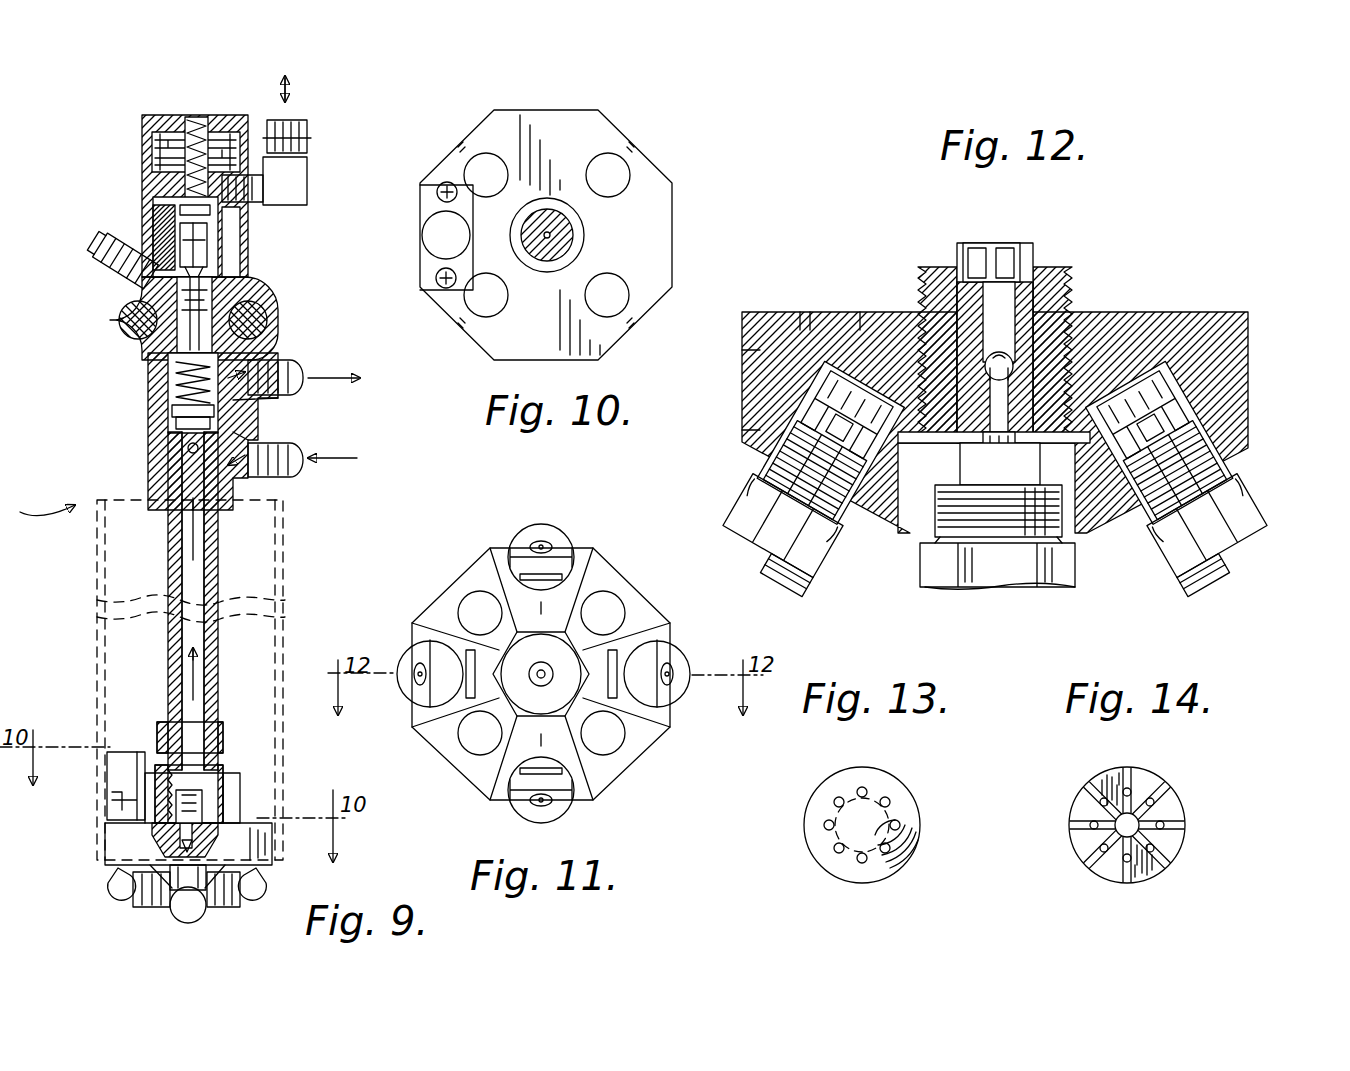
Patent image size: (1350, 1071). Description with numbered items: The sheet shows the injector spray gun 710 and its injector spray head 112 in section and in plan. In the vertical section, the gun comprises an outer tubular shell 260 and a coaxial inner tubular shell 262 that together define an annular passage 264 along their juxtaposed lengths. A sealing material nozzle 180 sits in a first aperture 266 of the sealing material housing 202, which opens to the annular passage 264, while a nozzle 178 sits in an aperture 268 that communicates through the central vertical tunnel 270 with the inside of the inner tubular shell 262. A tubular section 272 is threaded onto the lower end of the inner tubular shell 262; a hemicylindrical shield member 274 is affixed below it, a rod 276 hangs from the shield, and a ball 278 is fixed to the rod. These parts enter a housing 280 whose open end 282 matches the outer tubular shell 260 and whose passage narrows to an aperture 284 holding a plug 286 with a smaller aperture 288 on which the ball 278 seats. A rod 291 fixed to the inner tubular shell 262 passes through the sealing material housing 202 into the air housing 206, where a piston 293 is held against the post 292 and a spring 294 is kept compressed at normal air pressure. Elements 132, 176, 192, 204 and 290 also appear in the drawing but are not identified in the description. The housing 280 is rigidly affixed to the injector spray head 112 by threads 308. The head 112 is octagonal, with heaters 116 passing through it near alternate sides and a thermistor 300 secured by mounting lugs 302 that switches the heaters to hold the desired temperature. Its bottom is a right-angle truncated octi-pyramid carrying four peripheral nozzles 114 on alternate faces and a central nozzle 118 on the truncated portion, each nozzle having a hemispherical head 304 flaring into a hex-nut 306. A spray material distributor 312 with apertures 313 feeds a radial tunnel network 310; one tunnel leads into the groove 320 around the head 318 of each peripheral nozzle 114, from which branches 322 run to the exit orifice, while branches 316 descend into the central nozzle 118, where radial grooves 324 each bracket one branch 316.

In FIG. 9, the dispensing head assembly 710 is at (39, 497).
In FIG. 9, the injector spray head 112 is at (115, 843).
In FIG. 10, the injector spray head 112 is at (560, 111).
In FIG. 12, the injector spray head 112 is at (1210, 318).
In FIG. 9, the peripheral nozzles 114 is at (97, 620).
In FIG. 11, the peripheral nozzles 114 is at (545, 538).
In FIG. 12, the peripheral nozzles 114 is at (838, 545).
In FIG. 9, the heaters 116 is at (240, 795).
In FIG. 10, the heaters 116 is at (500, 162).
In FIG. 11, the heaters 116 is at (472, 602).
In FIG. 9, the central nozzle 118 is at (185, 926).
In FIG. 11, the central nozzle 118 is at (538, 638).
In FIG. 12, the central nozzle 118 is at (1066, 570).
In FIG. 9, the mounting bolt 132 is at (130, 320).
In FIG. 9, the air fitting 176 is at (292, 190).
In FIG. 9, the nozzle 178 is at (290, 378).
In FIG. 9, the sealing material nozzle 180 is at (303, 470).
In FIG. 9, the manifold block 192 is at (262, 293).
In FIG. 9, the sealing material housing 202 is at (160, 452).
In FIG. 9, the side fitting 204 is at (100, 243).
In FIG. 9, the air housing 206 is at (152, 150).
In FIG. 9, the outer tubular shell 260 is at (218, 543).
In FIG. 10, the outer tubular shell 260 is at (584, 250).
In FIG. 9, the inner tubular shell 262 is at (218, 568).
In FIG. 10, the inner tubular shell 262 is at (566, 232).
In FIG. 9, the annular passage 264 is at (218, 527).
In FIG. 9, the first aperture 266 is at (272, 428).
In FIG. 9, the aperture 268 is at (275, 410).
In FIG. 9, the central vertical tunnel 270 is at (172, 396).
In FIG. 9, the tubular section 272 is at (222, 770).
In FIG. 9, the hemicylindrical shield member 274 is at (178, 828).
In FIG. 12, the hemicylindrical shield member 274 is at (985, 243).
In FIG. 12, the rod 276 is at (1012, 300).
In FIG. 9, the ball 278 is at (175, 838).
In FIG. 12, the ball 278 is at (897, 342).
In FIG. 9, the housing 280 is at (178, 815).
In FIG. 12, the housing 280 is at (948, 272).
In FIG. 9, the open end 282 is at (222, 726).
In FIG. 12, the aperture 284 is at (1012, 322).
In FIG. 12, the plug 286 is at (832, 342).
In FIG. 12, the aperture 288 is at (1003, 385).
In FIG. 9, the return spring 290 is at (178, 366).
In FIG. 9, the rod 291 is at (180, 380).
In FIG. 9, the post 292 is at (247, 322).
In FIG. 9, the piston 293 is at (208, 248).
In FIG. 9, the spring 294 is at (218, 116).
In FIG. 9, the thermistor 300 is at (118, 751).
In FIG. 10, the thermistor 300 is at (434, 225).
In FIG. 10, the mounting lugs 302 is at (438, 192).
In FIG. 11, the hemispherical heads 304 is at (565, 550).
In FIG. 12, the hemispherical heads 304 is at (737, 462).
In FIG. 11, the hex-nut 306 is at (592, 572).
In FIG. 12, the threads 308 is at (912, 330).
In FIG. 12, the tunnel network 310 is at (1122, 470).
In FIG. 14, the tunnel network 310 is at (1152, 800).
In FIG. 12, the spray material distributor 312 is at (992, 452).
In FIG. 14, the spray material distributor 312 is at (1142, 827).
In FIG. 12, the apertures 313 is at (792, 345).
In FIG. 12, the branches 316 is at (1112, 500).
In FIG. 14, the branches 316 is at (1150, 815).
In FIG. 12, the head 318 is at (1140, 375).
In FIG. 13, the head 318 is at (917, 845).
In FIG. 12, the groove 320 is at (840, 410).
In FIG. 13, the groove 320 is at (846, 870).
In FIG. 12, the branches 322 is at (855, 397).
In FIG. 13, the branches 322 is at (885, 800).
In FIG. 14, the grooves 324 is at (1102, 804).